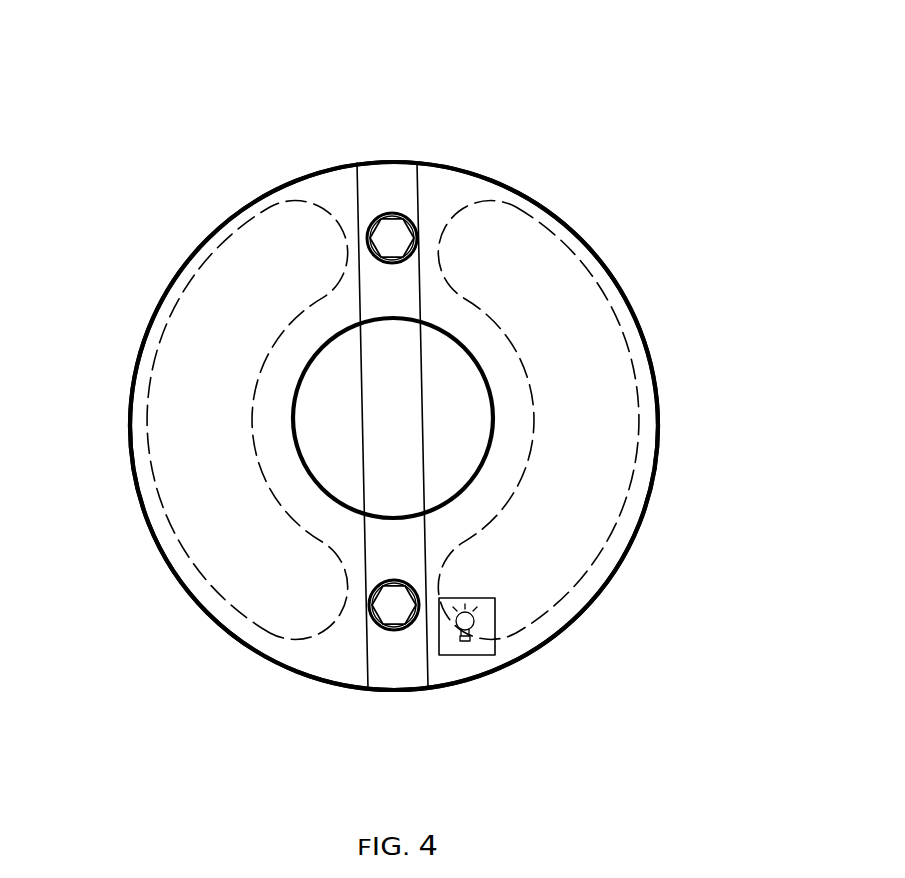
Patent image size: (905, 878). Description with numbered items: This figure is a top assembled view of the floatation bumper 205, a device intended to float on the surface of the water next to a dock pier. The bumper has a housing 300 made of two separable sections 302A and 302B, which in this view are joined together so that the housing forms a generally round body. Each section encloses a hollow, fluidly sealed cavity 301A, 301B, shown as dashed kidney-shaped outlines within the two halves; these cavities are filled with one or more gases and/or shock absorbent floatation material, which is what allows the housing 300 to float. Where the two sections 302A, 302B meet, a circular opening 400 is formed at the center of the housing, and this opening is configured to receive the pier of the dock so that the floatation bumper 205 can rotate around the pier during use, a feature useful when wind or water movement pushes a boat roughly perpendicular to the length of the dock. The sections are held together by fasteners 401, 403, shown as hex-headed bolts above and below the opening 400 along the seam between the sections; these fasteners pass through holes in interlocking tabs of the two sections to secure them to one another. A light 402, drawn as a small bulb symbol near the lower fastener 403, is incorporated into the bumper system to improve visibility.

The floatation bumper 205 is at (137, 63).
The housing 300 is at (563, 653).
The hollow fluidly sealed cavity 301A is at (195, 556).
The hollow fluidly sealed cavity 301B is at (628, 359).
The separable section 302A is at (180, 268).
The separable section 302B is at (532, 197).
The circular opening 400 is at (317, 398).
The fastener 401 is at (393, 213).
The light 402 is at (470, 655).
The fastener 403 is at (383, 628).